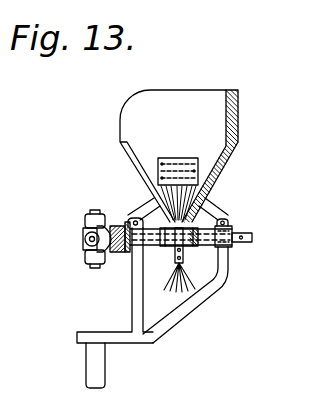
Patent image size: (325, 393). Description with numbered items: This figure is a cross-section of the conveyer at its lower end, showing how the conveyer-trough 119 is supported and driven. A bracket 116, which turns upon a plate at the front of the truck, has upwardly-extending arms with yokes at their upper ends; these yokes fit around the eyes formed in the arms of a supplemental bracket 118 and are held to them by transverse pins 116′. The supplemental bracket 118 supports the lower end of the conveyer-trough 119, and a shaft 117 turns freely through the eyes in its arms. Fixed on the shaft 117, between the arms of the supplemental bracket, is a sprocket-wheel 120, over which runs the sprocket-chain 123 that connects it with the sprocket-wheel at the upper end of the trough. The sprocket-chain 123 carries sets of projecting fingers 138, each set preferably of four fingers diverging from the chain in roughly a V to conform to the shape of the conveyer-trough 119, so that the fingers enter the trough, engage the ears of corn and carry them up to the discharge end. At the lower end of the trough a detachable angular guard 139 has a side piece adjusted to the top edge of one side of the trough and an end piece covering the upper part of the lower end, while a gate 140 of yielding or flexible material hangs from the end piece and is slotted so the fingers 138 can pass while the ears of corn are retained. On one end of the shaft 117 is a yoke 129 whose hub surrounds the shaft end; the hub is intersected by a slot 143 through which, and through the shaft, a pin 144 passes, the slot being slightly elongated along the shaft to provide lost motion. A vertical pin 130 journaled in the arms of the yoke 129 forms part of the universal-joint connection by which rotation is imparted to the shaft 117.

The bracket 116 is at (187, 310).
The transverse pins 116′ is at (136, 219).
The shaft 117 is at (252, 236).
The supplemental bracket 118 is at (201, 223).
The conveyer-trough 119 is at (213, 193).
The sprocket-wheel 120 is at (185, 258).
The sprocket-chain 123 is at (173, 258).
The yoke 129 is at (87, 261).
The vertical pin 130 is at (83, 236).
The projecting fingers 138 is at (183, 160).
The angular guard 139 is at (242, 113).
The gate 140 is at (240, 140).
The slot 143 is at (118, 251).
The pin 144 is at (126, 228).